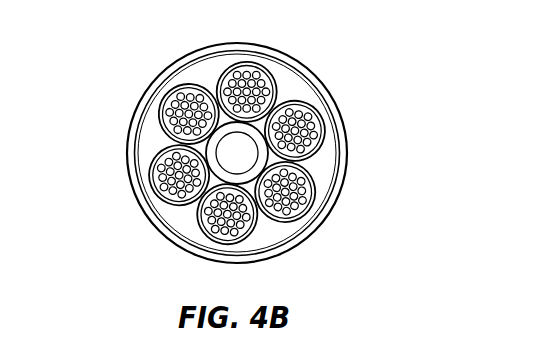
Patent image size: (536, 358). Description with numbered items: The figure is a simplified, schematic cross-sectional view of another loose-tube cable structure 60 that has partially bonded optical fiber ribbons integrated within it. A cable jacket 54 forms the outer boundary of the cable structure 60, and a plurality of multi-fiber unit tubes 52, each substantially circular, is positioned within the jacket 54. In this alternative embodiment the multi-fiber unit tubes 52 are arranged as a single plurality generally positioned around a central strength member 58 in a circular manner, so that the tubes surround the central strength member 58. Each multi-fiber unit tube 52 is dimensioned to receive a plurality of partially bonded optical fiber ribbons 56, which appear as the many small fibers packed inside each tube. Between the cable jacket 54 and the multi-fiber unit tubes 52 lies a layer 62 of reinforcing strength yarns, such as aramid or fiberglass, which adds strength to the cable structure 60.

The loose-tube cable structure 60 is at (111, 85).
The cable jacket 54 is at (255, 44).
The layer of reinforcing strength yarns 62 is at (316, 93).
The central strength member 58 is at (246, 147).
The multi-fiber unit tube 52 is at (319, 157).
The partially bonded optical fiber ribbon 56 is at (306, 214).